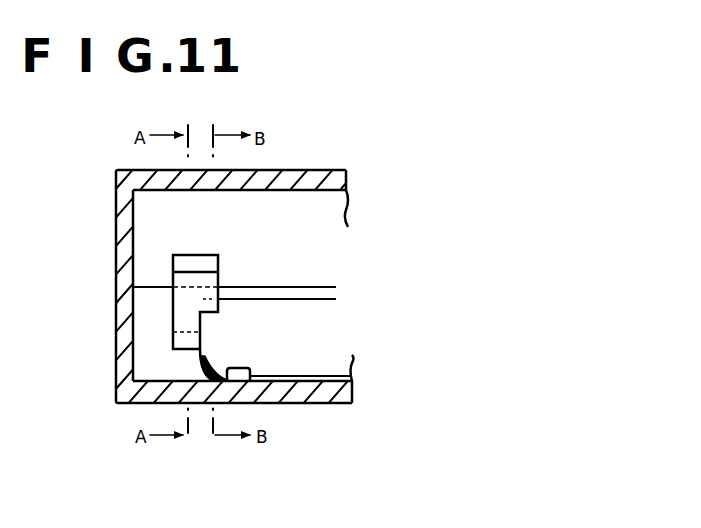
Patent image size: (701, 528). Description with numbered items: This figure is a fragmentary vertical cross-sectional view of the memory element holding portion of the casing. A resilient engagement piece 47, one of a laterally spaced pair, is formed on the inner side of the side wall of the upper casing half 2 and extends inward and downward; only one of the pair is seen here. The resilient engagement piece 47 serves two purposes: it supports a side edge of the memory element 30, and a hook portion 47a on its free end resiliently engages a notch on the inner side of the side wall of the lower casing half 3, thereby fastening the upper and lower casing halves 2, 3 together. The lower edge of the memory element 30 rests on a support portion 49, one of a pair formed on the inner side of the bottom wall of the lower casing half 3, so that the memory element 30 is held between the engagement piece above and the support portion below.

The upper casing half 2 is at (306, 171).
The lower casing half 3 is at (326, 398).
The memory element 30 is at (300, 316).
The resilient engagement piece 47 is at (173, 301).
The hook portion 47a is at (180, 342).
The support portion 49 is at (241, 366).